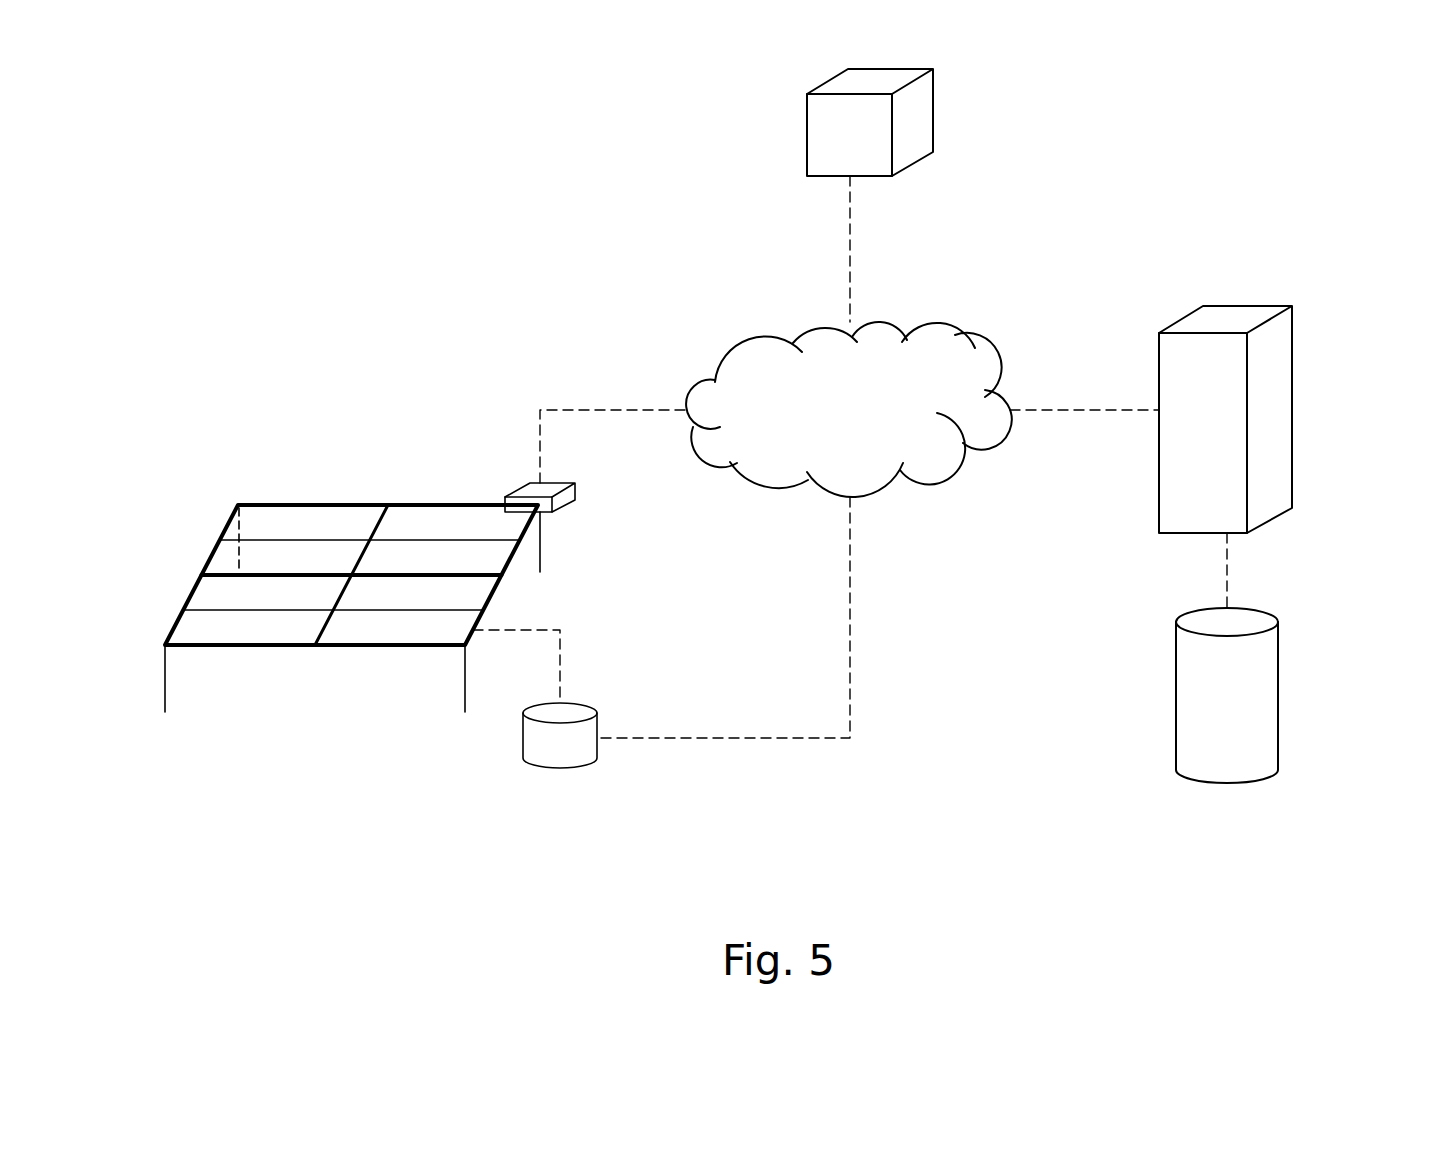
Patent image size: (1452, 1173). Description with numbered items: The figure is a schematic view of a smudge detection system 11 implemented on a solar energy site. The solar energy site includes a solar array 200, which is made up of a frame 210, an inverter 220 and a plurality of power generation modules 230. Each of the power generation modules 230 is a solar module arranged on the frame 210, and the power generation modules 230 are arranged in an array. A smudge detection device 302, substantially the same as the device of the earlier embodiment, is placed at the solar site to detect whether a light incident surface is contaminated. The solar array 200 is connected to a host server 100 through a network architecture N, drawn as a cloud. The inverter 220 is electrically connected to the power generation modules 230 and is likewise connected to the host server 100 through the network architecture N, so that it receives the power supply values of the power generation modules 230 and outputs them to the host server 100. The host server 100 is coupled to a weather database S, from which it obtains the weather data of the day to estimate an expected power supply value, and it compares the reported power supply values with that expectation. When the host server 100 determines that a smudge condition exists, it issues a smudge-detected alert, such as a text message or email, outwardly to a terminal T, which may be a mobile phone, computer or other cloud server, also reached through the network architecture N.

The smudge detection system 11 is at (212, 131).
The terminal T is at (817, 128).
The network architecture N is at (955, 335).
The host server 100 is at (1282, 410).
The weather database S is at (1260, 692).
The smudge detection device 302 is at (528, 493).
The solar array 200 is at (381, 709).
The frame 210 is at (440, 662).
The inverter 220 is at (549, 781).
The power generation modules 230 is at (387, 628).